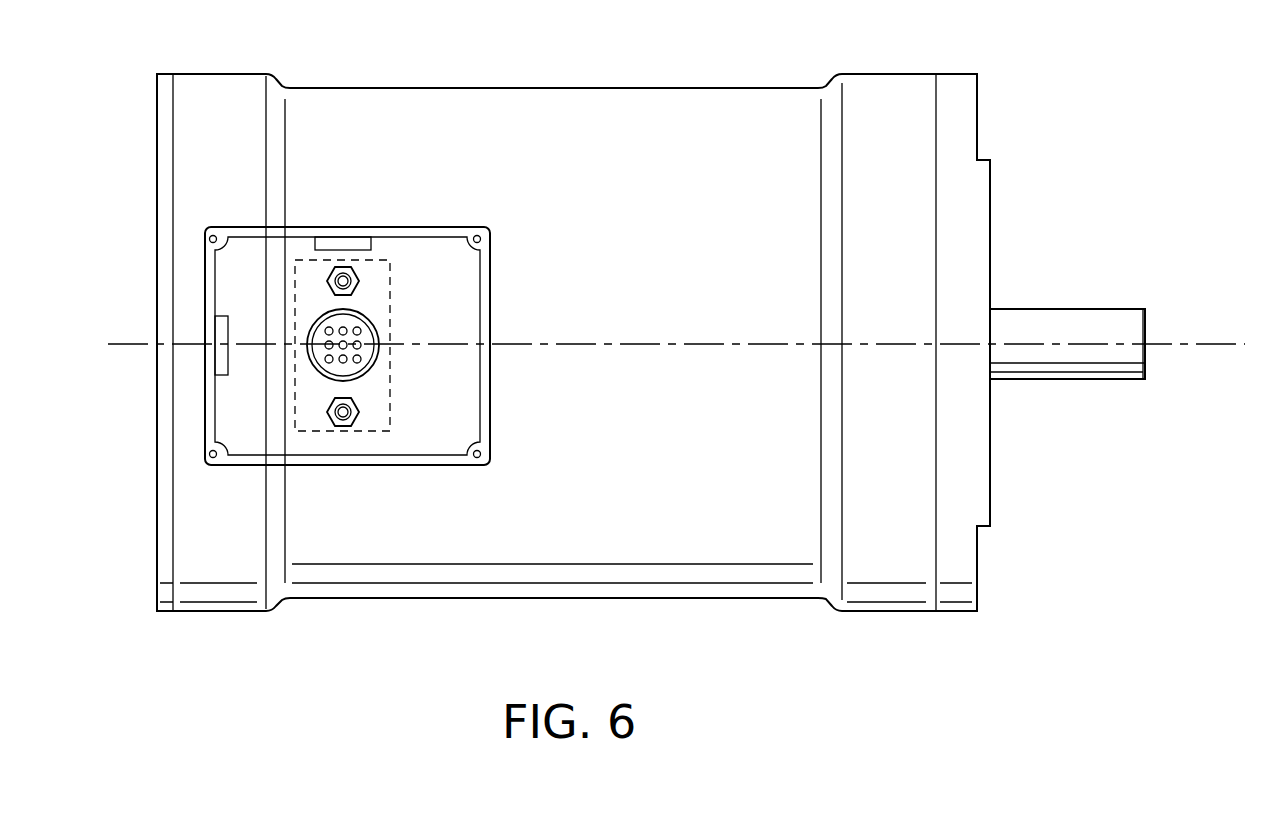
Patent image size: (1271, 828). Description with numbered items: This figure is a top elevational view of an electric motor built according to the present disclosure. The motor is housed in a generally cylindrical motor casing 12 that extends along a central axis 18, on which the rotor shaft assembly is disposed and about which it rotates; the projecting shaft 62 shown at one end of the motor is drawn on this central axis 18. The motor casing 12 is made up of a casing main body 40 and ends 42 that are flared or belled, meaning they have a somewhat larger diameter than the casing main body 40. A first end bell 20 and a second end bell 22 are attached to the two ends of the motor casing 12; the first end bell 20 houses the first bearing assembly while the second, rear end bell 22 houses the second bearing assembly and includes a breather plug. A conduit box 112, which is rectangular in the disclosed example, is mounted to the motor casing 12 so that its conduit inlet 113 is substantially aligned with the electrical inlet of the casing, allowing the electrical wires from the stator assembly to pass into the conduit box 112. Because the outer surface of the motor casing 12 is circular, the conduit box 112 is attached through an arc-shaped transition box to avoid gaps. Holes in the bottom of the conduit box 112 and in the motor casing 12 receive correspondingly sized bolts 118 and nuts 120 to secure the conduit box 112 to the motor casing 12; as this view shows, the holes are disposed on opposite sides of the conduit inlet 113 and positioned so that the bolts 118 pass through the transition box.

The motor casing 12 is at (623, 85).
The central axis 18 is at (1193, 343).
The first end bell 20 is at (965, 102).
The second end bell 22 is at (157, 145).
The casing main body 40 is at (427, 600).
The ends 42 is at (932, 25).
The shaft 62 is at (1114, 320).
The conduit box 112 is at (490, 278).
The conduit inlet 113 is at (370, 368).
The bolts 118 is at (392, 513).
The nuts 120 is at (465, 490).